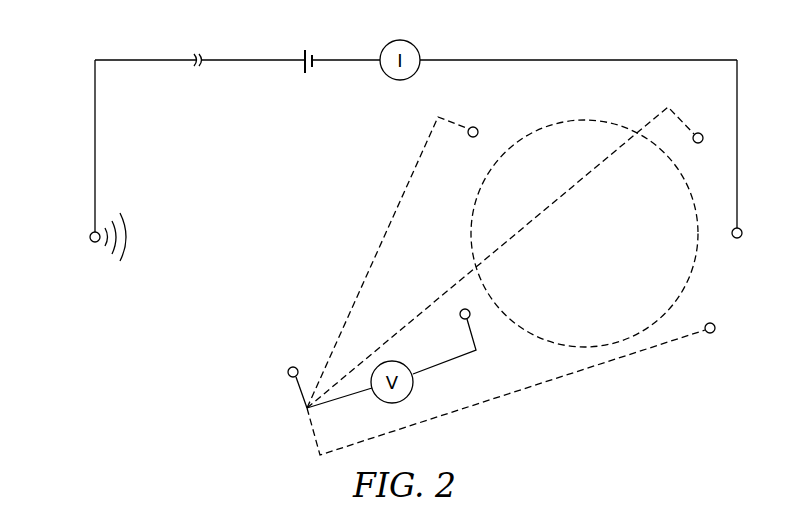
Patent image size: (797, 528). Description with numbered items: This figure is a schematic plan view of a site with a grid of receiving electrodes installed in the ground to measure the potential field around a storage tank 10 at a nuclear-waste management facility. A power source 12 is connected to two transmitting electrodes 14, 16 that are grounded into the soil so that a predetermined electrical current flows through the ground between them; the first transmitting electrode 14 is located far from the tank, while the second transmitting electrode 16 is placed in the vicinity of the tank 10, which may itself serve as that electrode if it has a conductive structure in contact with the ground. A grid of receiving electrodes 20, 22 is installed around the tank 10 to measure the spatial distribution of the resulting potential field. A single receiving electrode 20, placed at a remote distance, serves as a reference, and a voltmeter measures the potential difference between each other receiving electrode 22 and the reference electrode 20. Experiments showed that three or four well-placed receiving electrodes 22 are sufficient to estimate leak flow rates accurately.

The storage tank 10 is at (698, 258).
The power source 12 is at (305, 51).
The first transmitting electrode 14 is at (90, 237).
The second transmitting electrode 16 is at (742, 236).
The reference receiving electrode 20 is at (293, 367).
The receiving electrodes 22 is at (473, 127).